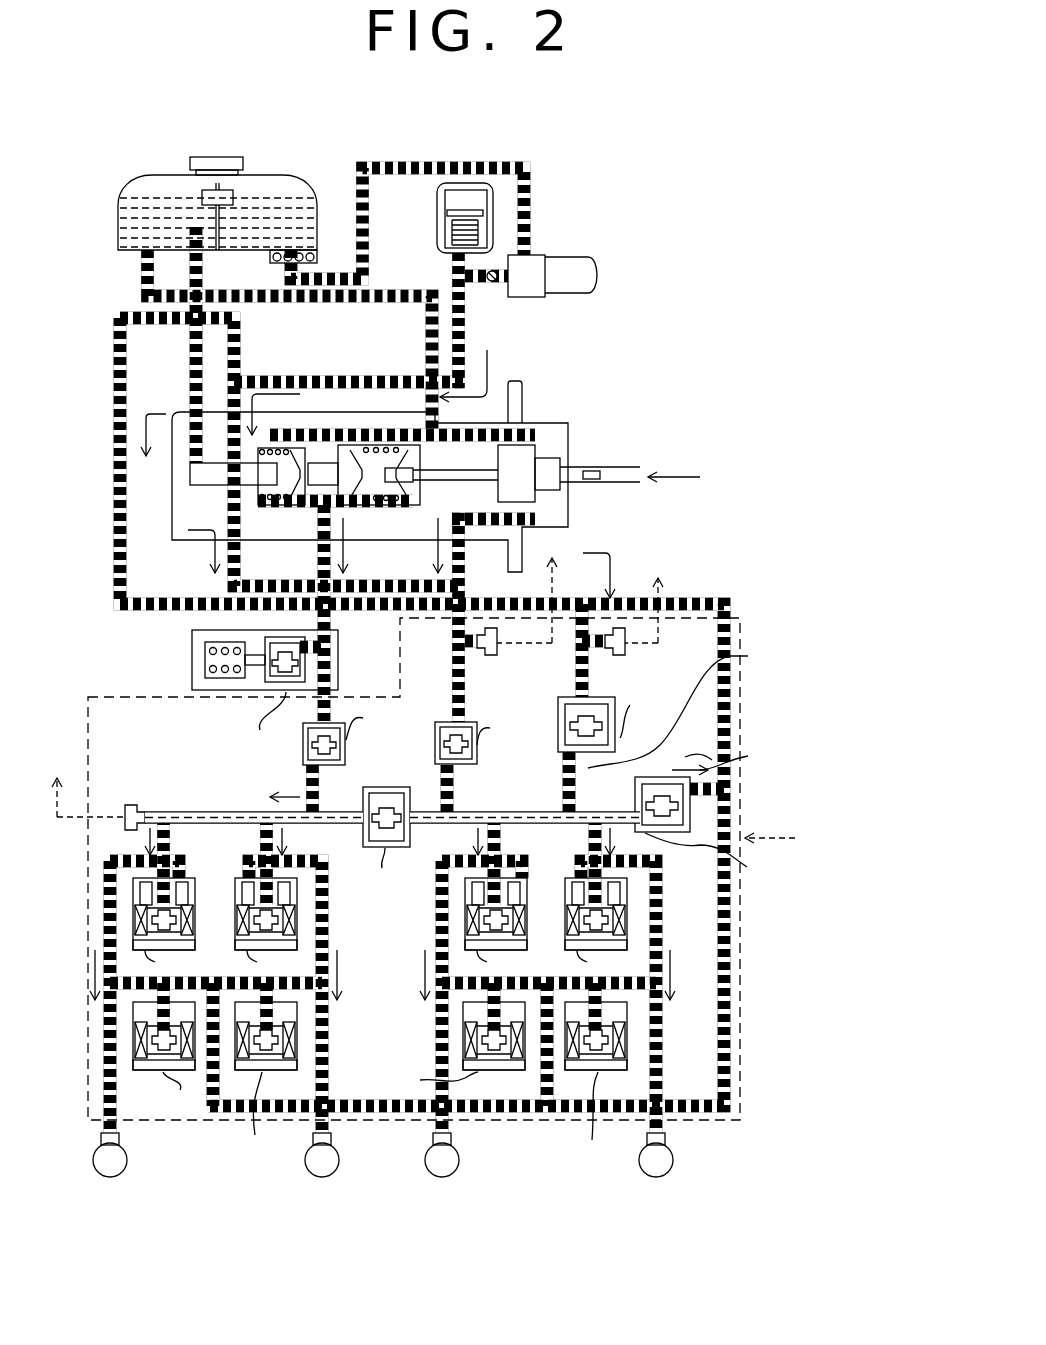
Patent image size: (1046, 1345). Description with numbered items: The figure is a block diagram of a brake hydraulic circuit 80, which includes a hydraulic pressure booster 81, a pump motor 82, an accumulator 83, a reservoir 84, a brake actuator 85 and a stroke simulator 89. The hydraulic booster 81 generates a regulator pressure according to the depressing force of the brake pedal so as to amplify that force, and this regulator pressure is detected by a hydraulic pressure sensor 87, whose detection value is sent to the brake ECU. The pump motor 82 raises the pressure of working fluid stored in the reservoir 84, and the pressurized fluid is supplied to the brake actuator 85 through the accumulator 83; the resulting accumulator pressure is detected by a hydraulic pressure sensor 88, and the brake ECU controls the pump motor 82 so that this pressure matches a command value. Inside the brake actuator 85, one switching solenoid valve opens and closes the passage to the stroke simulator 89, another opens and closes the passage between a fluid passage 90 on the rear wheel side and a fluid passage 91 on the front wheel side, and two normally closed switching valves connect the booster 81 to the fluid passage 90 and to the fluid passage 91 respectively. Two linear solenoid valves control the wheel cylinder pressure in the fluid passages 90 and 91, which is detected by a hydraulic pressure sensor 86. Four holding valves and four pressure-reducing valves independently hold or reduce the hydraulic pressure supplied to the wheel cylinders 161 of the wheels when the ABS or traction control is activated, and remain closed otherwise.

The brake hydraulic circuit 80 is at (757, 133).
The hydraulic pressure booster 81 is at (523, 398).
The pump motor 82 is at (585, 297).
The accumulator 83 is at (498, 193).
The reservoir 84 is at (283, 176).
The brake actuator 85 is at (740, 690).
The hydraulic pressure sensor 86 is at (135, 805).
The hydraulic pressure sensor 87 is at (487, 655).
The hydraulic pressure sensor 88 is at (625, 650).
The stroke simulator 89 is at (195, 672).
The fluid passage 90 is at (543, 818).
The fluid passage 91 is at (232, 812).
The wheel cylinder 161 is at (127, 1150).